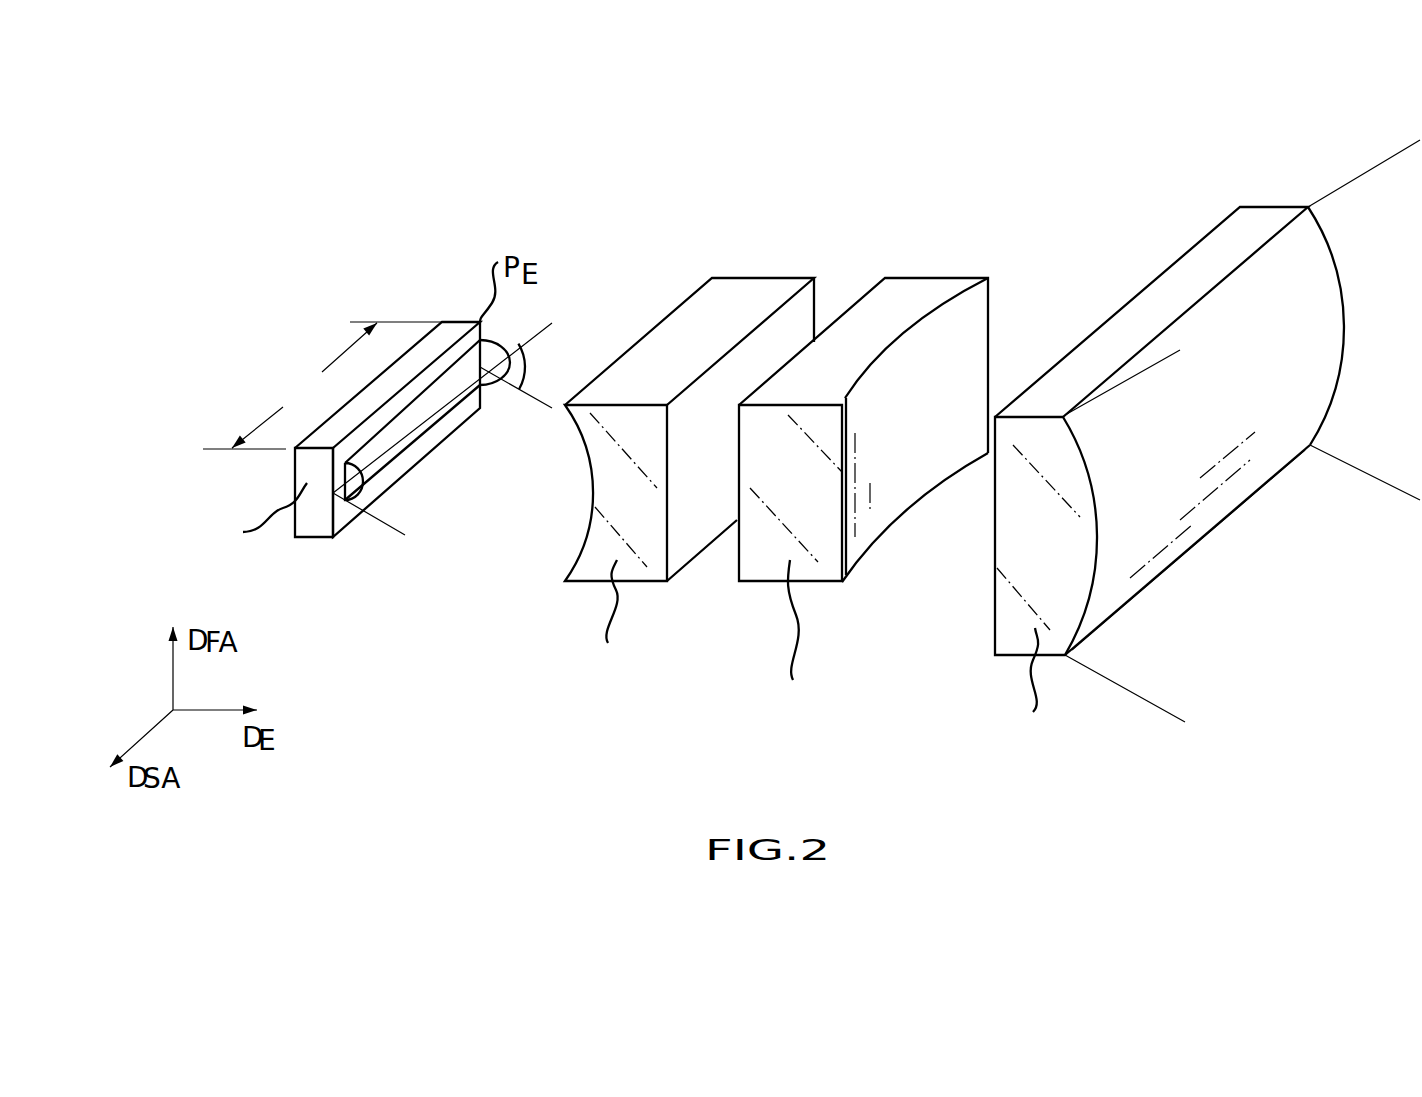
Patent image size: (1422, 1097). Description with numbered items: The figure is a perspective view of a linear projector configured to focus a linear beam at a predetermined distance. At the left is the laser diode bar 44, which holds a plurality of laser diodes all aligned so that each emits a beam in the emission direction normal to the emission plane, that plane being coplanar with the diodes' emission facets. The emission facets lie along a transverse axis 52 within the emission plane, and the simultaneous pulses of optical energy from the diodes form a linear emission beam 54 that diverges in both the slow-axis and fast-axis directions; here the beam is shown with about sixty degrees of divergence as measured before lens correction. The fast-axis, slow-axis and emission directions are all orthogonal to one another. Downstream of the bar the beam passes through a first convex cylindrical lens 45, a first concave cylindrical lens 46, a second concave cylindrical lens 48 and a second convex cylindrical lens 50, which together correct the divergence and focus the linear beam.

The laser diode bar 44 is at (338, 548).
The first convex cylindrical lens 45 is at (430, 432).
The transverse axis 52 is at (452, 393).
The linear emission beam 54 is at (582, 322).
The first concave cylindrical lens 46 is at (749, 250).
The second concave cylindrical lens 48 is at (938, 250).
The second convex cylindrical lens 50 is at (1157, 240).